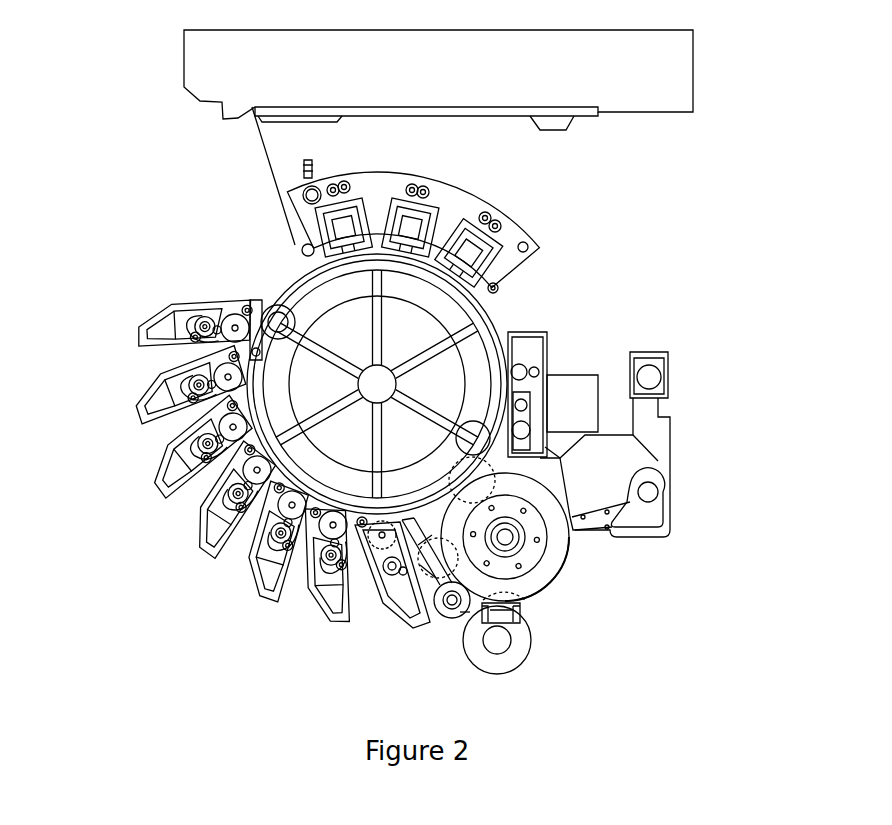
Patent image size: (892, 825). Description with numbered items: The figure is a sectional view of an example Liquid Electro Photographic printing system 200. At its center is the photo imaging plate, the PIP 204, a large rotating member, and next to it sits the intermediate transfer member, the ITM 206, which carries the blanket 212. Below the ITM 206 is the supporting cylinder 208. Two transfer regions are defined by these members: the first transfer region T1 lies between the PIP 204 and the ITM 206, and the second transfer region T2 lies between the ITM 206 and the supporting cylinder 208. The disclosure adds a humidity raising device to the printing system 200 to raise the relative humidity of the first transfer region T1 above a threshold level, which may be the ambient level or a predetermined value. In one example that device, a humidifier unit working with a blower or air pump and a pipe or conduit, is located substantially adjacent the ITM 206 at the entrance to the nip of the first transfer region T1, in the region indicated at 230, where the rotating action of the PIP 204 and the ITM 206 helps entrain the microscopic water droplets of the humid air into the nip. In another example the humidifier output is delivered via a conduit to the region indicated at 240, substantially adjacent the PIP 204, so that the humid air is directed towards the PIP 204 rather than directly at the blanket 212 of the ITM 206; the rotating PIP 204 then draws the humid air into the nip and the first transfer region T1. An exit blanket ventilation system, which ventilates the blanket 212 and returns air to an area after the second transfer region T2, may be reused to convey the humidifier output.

The LEP printing system 200 is at (100, 120).
The PIP 204 is at (447, 370).
The ITM 206 is at (552, 565).
The supporting cylinder 208 is at (517, 652).
The blanket 212 is at (557, 587).
The region at the entrance to the nip of the first transfer region 230 is at (433, 625).
The region substantially adjacent the PIP 240 is at (400, 590).
The first transfer region T1 is at (358, 600).
The second transfer region T2 is at (527, 607).